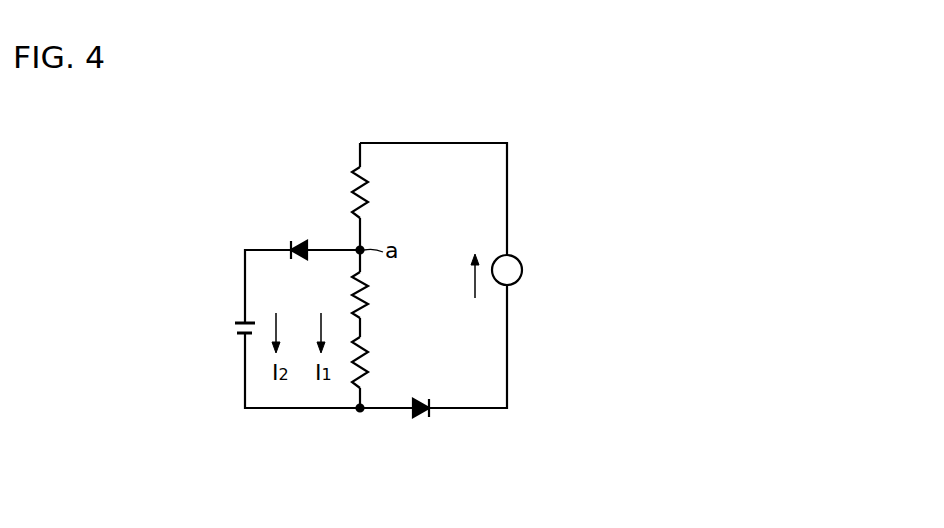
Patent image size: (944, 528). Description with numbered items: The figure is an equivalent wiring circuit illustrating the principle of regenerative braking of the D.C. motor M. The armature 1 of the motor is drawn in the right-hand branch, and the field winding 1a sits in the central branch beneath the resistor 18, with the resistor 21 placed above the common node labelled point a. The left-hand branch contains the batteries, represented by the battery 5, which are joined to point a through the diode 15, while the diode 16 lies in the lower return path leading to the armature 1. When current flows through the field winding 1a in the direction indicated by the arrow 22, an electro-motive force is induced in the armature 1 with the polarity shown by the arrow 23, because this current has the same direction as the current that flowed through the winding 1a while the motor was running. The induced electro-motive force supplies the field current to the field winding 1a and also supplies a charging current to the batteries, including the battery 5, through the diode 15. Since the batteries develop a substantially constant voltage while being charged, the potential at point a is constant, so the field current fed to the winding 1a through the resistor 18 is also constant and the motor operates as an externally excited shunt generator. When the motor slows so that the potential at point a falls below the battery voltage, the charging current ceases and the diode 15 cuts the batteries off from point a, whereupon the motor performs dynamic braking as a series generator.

The armature 1 is at (514, 284).
The field winding 1a is at (368, 366).
The battery 5 is at (218, 338).
The diode 15 is at (297, 243).
The diode 16 is at (422, 418).
The starting resistor 18 is at (370, 300).
The resistor 21 is at (352, 190).
The arrow 22 is at (306, 319).
The arrow 23 is at (474, 260).